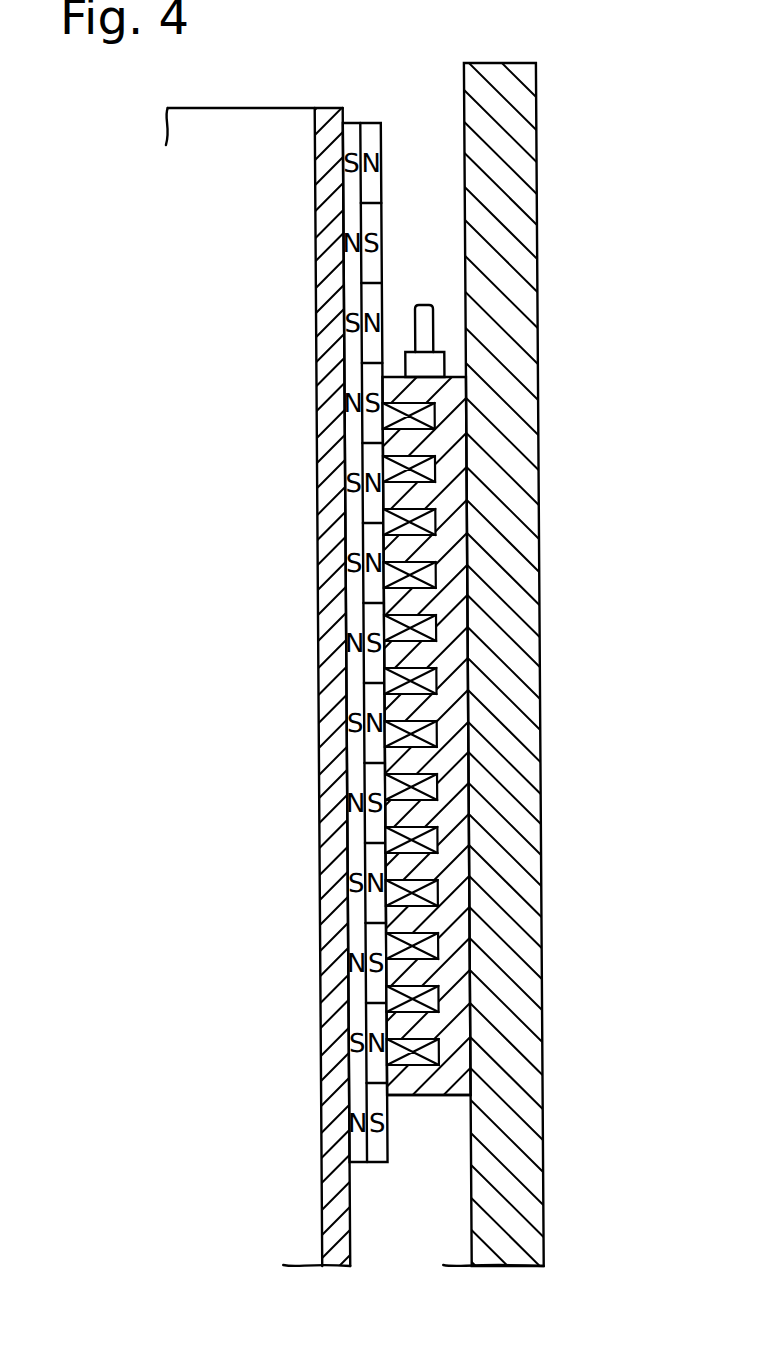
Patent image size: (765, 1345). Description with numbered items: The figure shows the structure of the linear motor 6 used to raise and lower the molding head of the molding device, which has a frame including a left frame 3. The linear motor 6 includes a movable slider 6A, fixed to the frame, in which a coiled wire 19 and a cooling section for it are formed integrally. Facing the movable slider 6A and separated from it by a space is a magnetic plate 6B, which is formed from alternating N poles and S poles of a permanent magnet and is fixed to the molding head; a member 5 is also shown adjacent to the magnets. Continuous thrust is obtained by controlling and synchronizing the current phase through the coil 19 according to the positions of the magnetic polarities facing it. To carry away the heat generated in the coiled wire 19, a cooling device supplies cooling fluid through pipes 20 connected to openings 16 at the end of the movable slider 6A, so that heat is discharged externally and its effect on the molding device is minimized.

The left frame 3 is at (522, 198).
The movable member 5 is at (244, 108).
The linear motor 6 is at (529, 740).
The movable slider 6A is at (455, 1022).
The magnetic plate 6B is at (381, 1117).
The opening 16 is at (437, 363).
The coiled wire 19 is at (430, 423).
The pipe 20 is at (427, 328).